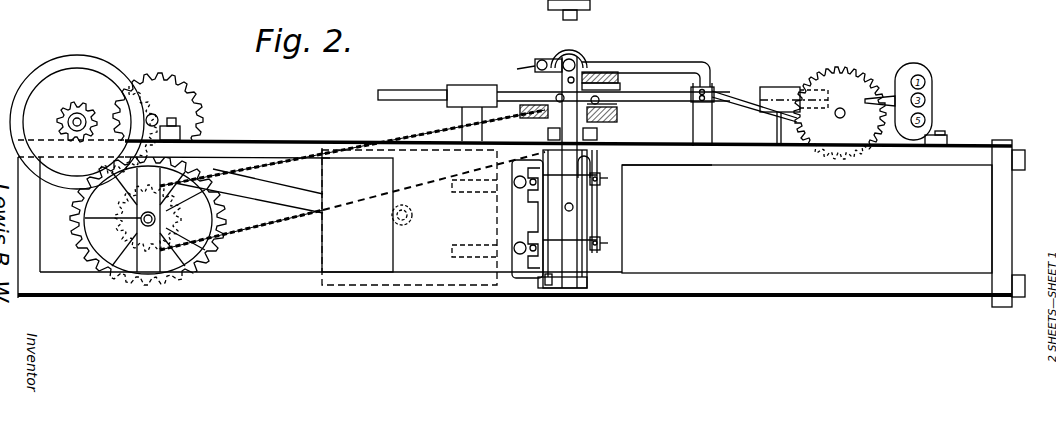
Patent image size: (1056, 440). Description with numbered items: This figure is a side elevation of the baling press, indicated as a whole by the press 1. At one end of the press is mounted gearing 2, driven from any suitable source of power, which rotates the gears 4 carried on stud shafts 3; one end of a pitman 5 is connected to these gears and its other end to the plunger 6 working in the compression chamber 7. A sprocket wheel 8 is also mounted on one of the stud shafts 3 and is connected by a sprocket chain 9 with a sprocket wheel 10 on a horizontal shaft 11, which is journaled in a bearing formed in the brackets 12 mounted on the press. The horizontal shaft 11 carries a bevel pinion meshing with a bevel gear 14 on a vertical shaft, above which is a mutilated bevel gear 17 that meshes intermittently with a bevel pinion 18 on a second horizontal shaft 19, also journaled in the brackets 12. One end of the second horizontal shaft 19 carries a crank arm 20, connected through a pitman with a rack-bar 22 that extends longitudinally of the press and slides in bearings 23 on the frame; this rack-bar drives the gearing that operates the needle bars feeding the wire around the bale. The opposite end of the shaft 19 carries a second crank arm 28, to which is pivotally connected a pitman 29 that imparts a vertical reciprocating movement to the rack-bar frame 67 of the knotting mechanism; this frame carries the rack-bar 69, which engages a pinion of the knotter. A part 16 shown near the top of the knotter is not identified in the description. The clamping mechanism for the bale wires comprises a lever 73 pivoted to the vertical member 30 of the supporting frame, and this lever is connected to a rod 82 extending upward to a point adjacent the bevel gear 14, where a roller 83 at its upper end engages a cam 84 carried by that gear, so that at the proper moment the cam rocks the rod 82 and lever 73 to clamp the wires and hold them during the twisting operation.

The press 1 is at (718, 288).
The gearing 2 is at (157, 72).
The stud shafts 3 is at (82, 214).
The gears 4 is at (83, 252).
The pitman 5 is at (283, 196).
The plunger 6 is at (410, 266).
The compression chamber 7 is at (353, 256).
The sprocket wheel 8 is at (148, 220).
The sprocket chain 9 is at (268, 222).
The sprocket wheel 10 is at (558, 98).
The horizontal shaft 11 is at (536, 122).
The brackets 12 is at (553, 6).
The bevel gear 14 is at (606, 120).
The head 16 is at (622, 6).
The mutilated bevel gear 17 is at (605, 78).
The bevel pinion 18 is at (580, 57).
The second horizontal shaft 19 is at (556, 57).
The crank arm 20 is at (516, 71).
The rack-bar 22 is at (378, 95).
The bearings 23 is at (462, 90).
The second crank arm 28 is at (572, 52).
The pitman 29 is at (590, 160).
The vertical member 30 is at (532, 266).
The rack-bar frame 67 is at (571, 282).
The rack-bar 69 is at (543, 210).
The lever 73 is at (608, 178).
The rod 82 is at (593, 210).
The roller 83 is at (619, 86).
The cam 84 is at (622, 103).